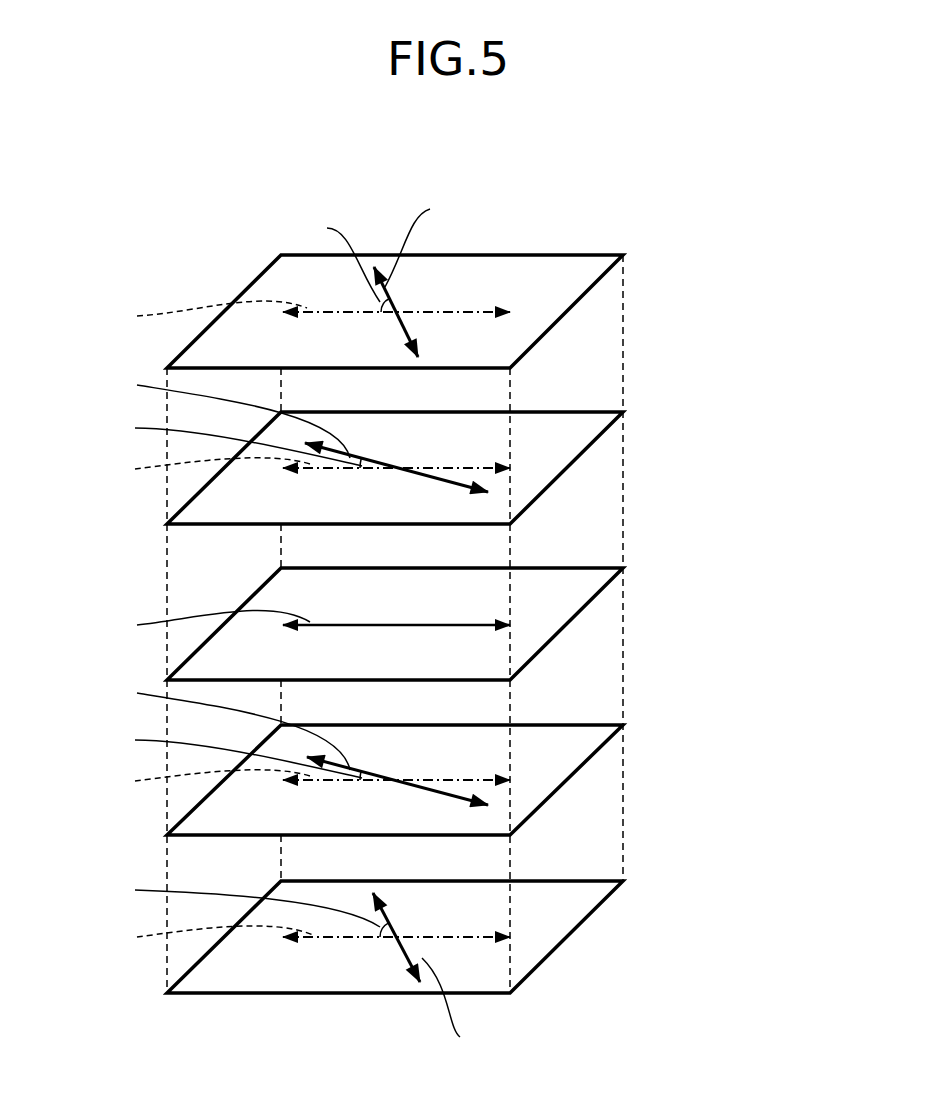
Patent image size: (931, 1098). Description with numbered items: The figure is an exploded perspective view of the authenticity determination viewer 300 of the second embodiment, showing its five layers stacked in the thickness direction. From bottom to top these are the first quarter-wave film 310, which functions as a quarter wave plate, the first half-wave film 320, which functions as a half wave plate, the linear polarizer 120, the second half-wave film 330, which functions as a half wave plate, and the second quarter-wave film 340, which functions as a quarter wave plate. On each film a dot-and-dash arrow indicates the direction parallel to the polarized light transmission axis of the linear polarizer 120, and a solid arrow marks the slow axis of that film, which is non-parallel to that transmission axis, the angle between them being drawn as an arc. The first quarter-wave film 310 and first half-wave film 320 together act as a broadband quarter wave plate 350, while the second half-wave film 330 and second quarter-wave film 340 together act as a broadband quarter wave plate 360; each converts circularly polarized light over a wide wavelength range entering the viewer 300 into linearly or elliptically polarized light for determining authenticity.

The authenticity determination viewer 300 is at (624, 131).
The second λ/4 film 340 is at (566, 314).
The second λ/2 film 330 is at (434, 468).
The broadband ¼ wave plate 360 is at (475, 389).
The linear polarizer 120 is at (566, 627).
The first λ/2 film 320 is at (566, 782).
The first λ/4 film 310 is at (434, 937).
The broadband ¼ wave plate 350 is at (475, 859).